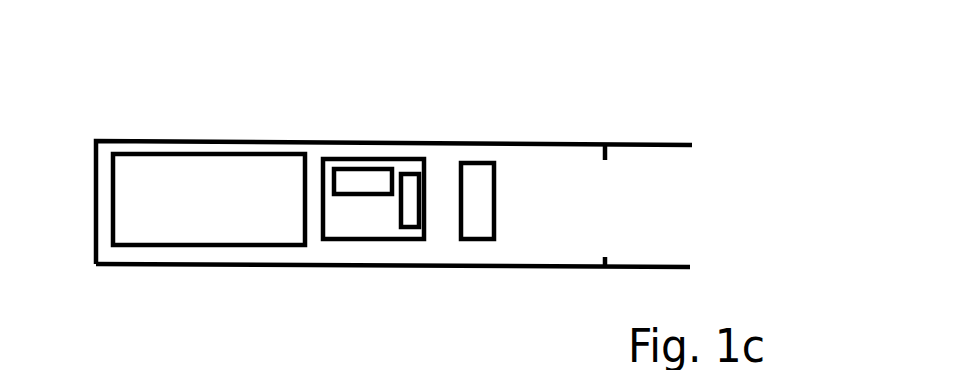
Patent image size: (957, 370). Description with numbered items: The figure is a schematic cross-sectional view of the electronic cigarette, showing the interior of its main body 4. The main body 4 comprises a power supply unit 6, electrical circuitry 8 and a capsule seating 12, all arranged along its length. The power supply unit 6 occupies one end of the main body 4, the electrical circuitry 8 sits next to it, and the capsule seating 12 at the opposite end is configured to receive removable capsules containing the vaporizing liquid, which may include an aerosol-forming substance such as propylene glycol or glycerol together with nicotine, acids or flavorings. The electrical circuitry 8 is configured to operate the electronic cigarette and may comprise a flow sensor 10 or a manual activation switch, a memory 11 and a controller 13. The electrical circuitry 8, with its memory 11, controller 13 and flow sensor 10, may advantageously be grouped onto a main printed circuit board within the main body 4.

The main body 4 is at (220, 120).
The power supply unit 6 is at (177, 210).
The electrical circuitry 8 is at (372, 217).
The flow sensor 10 is at (473, 232).
The memory 11 is at (358, 177).
The capsule seating 12 is at (670, 188).
The controller 13 is at (412, 183).